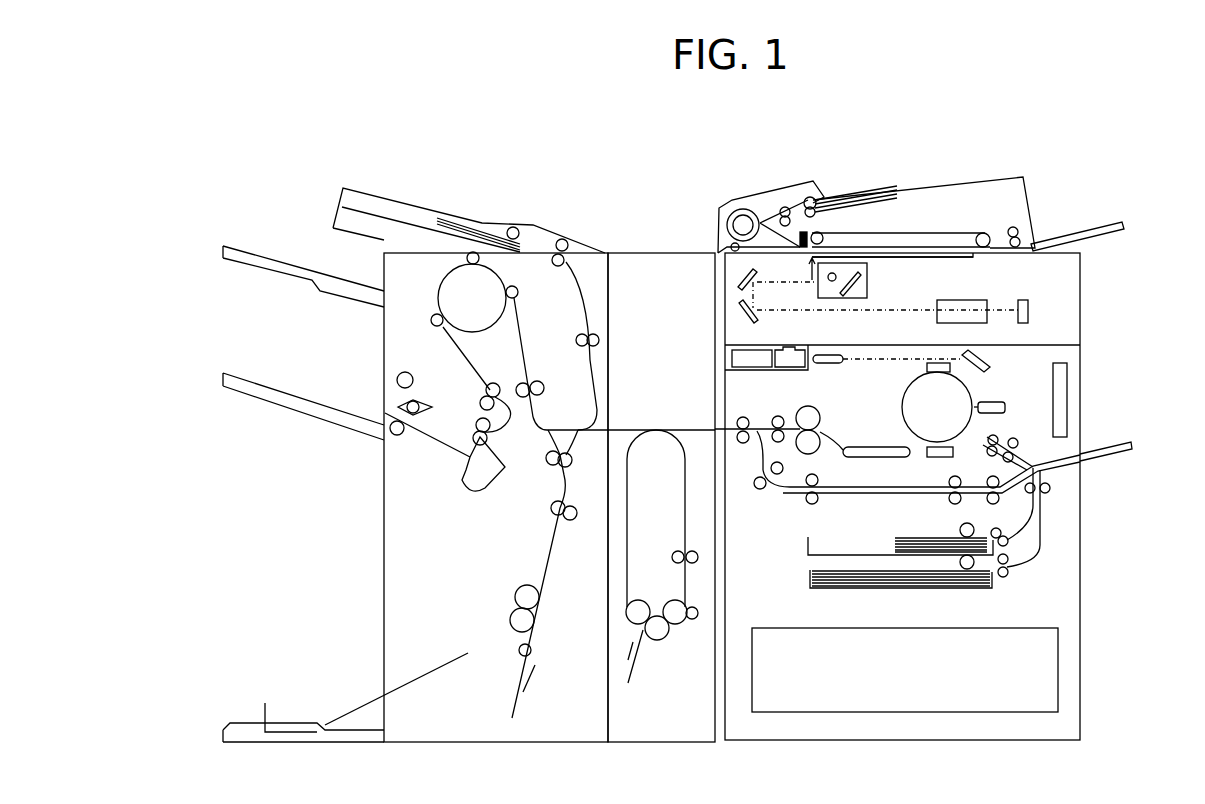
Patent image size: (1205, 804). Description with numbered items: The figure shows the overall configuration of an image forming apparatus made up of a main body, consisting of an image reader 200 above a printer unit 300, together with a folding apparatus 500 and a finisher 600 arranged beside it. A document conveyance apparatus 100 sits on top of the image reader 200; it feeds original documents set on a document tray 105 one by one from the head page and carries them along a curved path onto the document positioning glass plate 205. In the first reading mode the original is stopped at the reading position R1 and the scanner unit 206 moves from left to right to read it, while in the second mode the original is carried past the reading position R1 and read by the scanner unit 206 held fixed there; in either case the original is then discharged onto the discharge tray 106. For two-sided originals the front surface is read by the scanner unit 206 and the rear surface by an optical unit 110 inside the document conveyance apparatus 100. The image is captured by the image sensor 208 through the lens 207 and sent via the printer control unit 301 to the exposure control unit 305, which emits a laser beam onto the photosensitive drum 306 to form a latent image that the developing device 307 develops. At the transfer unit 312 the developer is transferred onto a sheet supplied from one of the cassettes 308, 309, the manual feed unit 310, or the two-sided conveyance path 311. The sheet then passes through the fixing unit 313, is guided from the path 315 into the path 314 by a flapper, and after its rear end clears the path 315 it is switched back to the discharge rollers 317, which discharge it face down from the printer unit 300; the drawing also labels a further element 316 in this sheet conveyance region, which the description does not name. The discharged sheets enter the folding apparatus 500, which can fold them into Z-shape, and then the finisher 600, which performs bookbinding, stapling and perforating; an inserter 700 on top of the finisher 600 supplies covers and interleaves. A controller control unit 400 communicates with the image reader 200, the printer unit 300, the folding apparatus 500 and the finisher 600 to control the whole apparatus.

The document conveyance apparatus 100 is at (772, 195).
The document tray 105 is at (942, 190).
The discharge tray 106 is at (1085, 230).
The optical unit 110 is at (810, 232).
The reading position R1 is at (800, 269).
The image reader 200 is at (1082, 313).
The document positioning glass plate 205 is at (1083, 253).
The scanner unit 206 is at (868, 280).
The lens 207 is at (988, 296).
The image sensor 208 is at (1050, 300).
The printer unit 300 is at (1082, 695).
The printer control unit 301 is at (1068, 400).
The exposure control unit 305 is at (728, 358).
The photosensitive drum 306 is at (970, 385).
The developing device 307 is at (1003, 408).
The cassette 308 is at (808, 545).
The cassette 309 is at (810, 575).
The manual feed unit 310 is at (1108, 460).
The two-sided conveyance path 311 is at (858, 494).
The transfer unit 312 is at (925, 447).
The fixing unit 313 is at (812, 435).
The path 314 is at (872, 455).
The path 315 is at (768, 453).
The reverse conveyance path 316 is at (752, 447).
The discharge rollers 317 is at (738, 436).
The controller control unit 400 is at (1025, 628).
The folding apparatus 500 is at (652, 253).
The finisher 600 is at (384, 574).
The inserter 700 is at (407, 200).